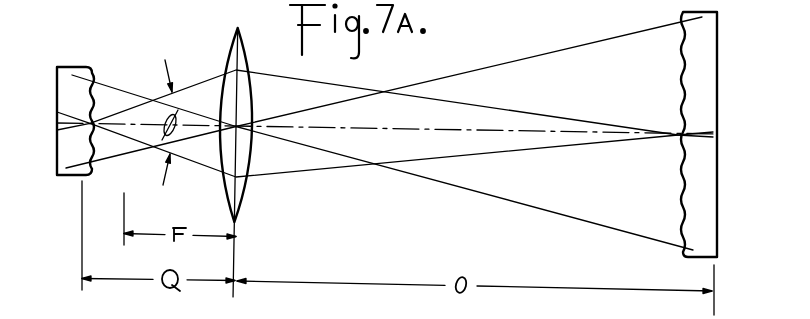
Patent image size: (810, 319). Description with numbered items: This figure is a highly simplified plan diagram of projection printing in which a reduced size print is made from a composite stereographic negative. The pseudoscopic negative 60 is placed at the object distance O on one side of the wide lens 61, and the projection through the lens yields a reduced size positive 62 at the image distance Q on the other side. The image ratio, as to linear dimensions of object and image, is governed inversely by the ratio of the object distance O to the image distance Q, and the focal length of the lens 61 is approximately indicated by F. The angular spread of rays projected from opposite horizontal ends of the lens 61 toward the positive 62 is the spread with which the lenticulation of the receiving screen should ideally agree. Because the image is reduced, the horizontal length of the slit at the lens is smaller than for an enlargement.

The pseudoscopic negative 60 is at (707, 58).
The wide lens 61 is at (235, 49).
The reduced size positive 62 is at (57, 153).